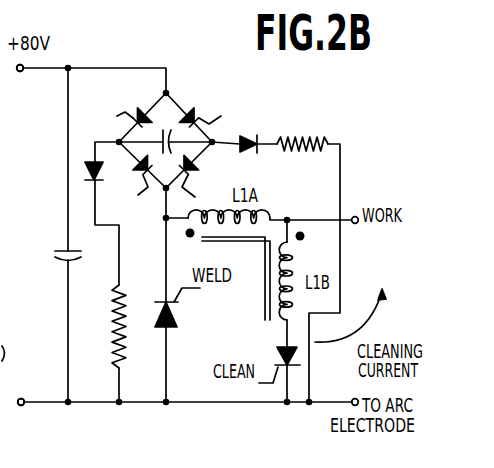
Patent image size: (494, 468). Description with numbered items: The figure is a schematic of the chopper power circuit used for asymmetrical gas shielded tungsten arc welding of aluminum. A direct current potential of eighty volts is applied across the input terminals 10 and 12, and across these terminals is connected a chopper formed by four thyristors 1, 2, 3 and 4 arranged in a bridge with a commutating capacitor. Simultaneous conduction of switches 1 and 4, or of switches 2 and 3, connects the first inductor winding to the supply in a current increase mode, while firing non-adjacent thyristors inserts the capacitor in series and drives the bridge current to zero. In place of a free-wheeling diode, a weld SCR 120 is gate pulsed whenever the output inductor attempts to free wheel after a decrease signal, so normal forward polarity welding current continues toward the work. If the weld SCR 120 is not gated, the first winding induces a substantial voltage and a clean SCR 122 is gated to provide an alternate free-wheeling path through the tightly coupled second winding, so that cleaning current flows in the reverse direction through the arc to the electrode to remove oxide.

The thyristor 1 is at (134, 110).
The thyristor 2 is at (193, 170).
The thyristor 3 is at (203, 101).
The thyristor 4 is at (130, 170).
The input terminal 10 is at (17, 72).
The input terminal 12 is at (23, 398).
The weld SCR 120 is at (175, 317).
The clean SCR 122 is at (278, 358).